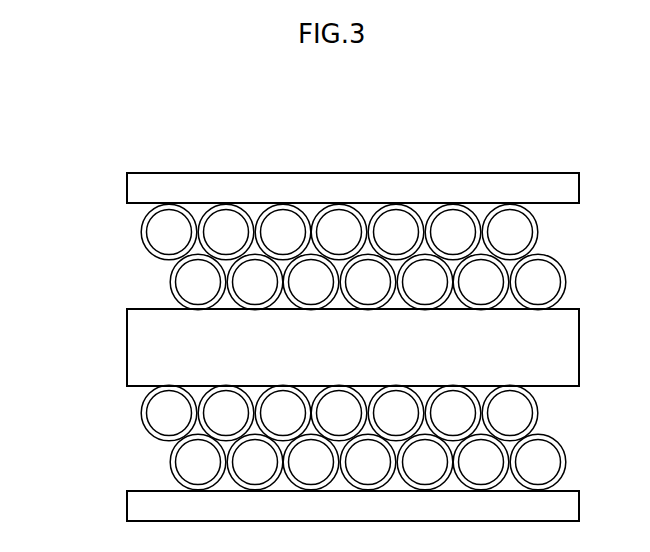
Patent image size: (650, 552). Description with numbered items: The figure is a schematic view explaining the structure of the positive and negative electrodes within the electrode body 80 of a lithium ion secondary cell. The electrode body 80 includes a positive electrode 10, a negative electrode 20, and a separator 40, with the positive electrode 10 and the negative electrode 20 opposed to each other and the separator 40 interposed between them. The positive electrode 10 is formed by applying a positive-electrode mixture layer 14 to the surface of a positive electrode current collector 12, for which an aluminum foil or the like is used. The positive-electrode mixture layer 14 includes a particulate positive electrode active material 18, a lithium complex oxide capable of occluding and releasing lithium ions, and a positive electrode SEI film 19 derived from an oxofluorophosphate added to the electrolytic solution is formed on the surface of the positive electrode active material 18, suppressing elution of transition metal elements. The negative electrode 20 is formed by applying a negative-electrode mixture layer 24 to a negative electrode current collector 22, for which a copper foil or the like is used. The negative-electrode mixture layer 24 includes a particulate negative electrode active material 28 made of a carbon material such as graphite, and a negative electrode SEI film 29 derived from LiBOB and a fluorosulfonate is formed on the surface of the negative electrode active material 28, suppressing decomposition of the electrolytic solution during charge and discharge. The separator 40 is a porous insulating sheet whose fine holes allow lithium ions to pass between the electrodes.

The electrode body 80 is at (619, 127).
The positive electrode 10 is at (62, 175).
The positive electrode current collector 12 is at (127, 188).
The positive-electrode mixture layer 14 is at (118, 215).
The positive electrode SEI film 19 is at (536, 227).
The positive electrode active material 18 is at (543, 275).
The separator 40 is at (127, 347).
The negative electrode 20 is at (62, 422).
The negative-electrode mixture layer 24 is at (118, 393).
The negative electrode SEI film 29 is at (536, 407).
The negative electrode active material 28 is at (543, 454).
The negative electrode current collector 22 is at (127, 500).